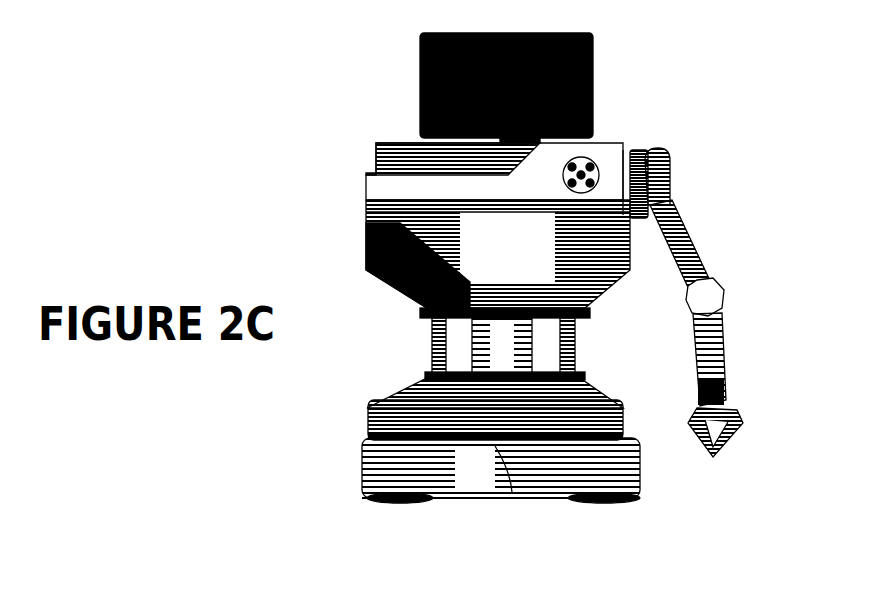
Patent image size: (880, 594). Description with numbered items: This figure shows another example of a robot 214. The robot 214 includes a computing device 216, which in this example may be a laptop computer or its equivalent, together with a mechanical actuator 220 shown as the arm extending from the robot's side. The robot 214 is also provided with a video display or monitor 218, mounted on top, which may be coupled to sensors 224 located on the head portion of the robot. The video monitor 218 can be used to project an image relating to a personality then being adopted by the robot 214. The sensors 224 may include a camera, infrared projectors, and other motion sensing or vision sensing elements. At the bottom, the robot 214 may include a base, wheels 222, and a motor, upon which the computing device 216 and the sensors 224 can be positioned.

The robot 214 is at (320, 117).
The computing device 216 is at (468, 341).
The video display or monitor 218 is at (578, 68).
The mechanical actuator 220 is at (716, 332).
The wheels 222 is at (412, 498).
The sensors 224 is at (600, 175).